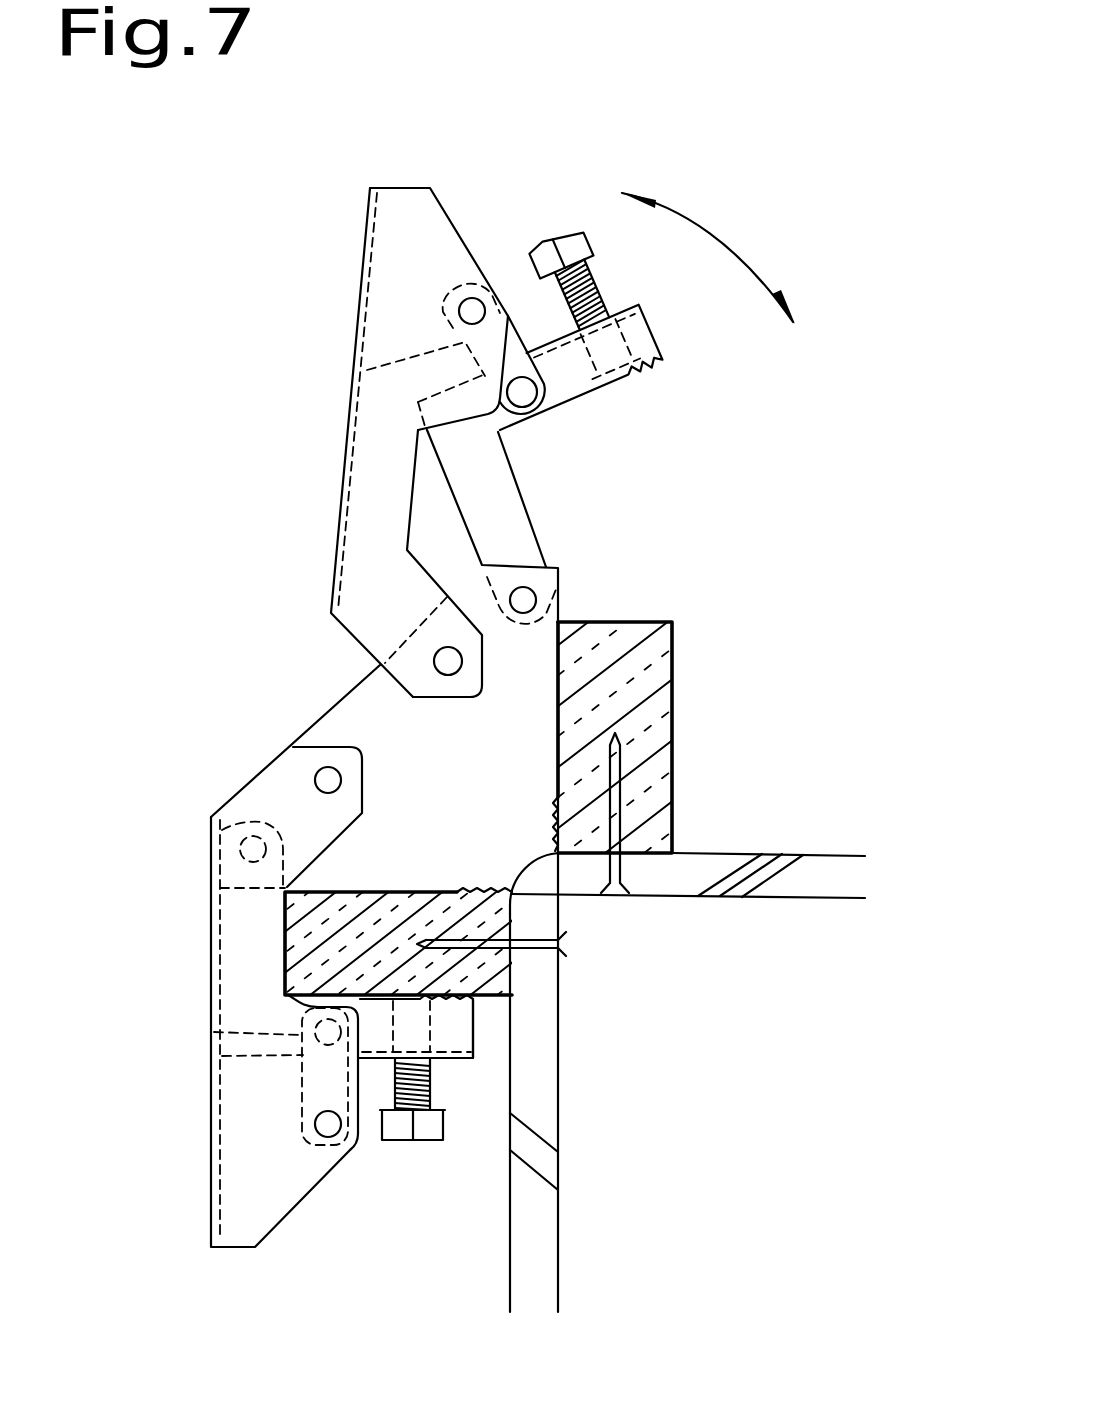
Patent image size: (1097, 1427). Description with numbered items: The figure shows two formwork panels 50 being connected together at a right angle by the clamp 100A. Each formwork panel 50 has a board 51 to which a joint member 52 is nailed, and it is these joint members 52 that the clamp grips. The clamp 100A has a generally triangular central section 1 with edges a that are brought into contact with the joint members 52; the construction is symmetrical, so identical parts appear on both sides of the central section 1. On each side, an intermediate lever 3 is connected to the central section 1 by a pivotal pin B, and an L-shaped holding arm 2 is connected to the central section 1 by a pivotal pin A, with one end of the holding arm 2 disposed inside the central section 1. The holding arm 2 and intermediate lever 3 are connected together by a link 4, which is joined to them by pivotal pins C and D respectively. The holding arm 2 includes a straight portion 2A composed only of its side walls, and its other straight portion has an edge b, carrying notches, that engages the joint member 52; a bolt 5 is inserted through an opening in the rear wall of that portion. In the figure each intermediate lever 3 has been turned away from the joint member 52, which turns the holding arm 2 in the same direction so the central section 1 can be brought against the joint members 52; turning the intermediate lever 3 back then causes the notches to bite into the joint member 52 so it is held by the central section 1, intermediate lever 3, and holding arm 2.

The central section 1 is at (315, 707).
The holding arm 2 is at (663, 335).
The straight portion 2A is at (470, 1032).
The intermediate lever 3 is at (357, 280).
The link 4 is at (366, 371).
The bolt 5 is at (598, 273).
The formwork panel 50 is at (663, 985).
The board 51 is at (805, 855).
The joint member 52 is at (674, 701).
The clamp 100A is at (300, 540).
The pivotal pin A is at (541, 599).
The pivotal pin B is at (447, 674).
The pivotal pin C is at (473, 300).
The pivotal pin D is at (526, 405).
The edge a is at (561, 742).
The edge b is at (590, 400).